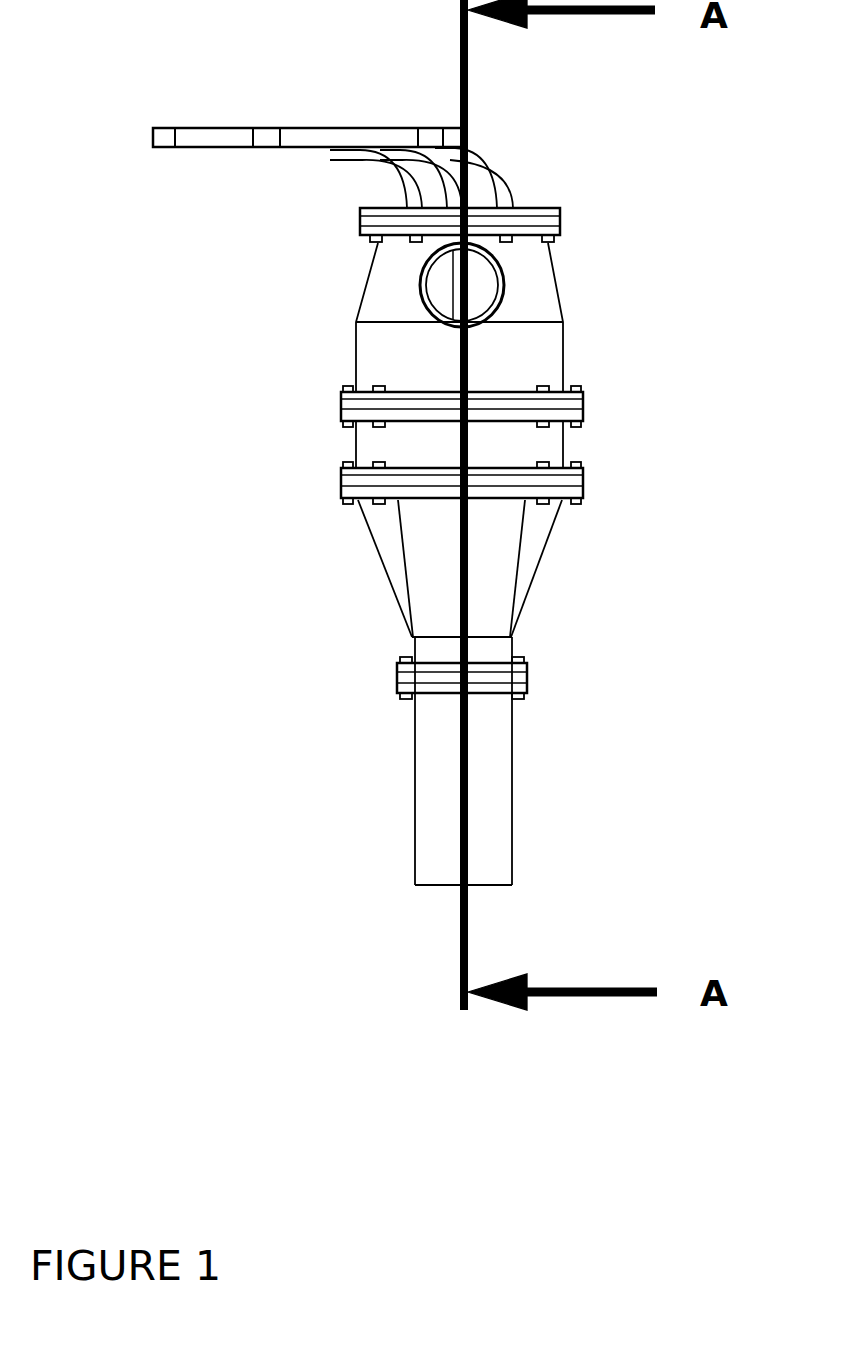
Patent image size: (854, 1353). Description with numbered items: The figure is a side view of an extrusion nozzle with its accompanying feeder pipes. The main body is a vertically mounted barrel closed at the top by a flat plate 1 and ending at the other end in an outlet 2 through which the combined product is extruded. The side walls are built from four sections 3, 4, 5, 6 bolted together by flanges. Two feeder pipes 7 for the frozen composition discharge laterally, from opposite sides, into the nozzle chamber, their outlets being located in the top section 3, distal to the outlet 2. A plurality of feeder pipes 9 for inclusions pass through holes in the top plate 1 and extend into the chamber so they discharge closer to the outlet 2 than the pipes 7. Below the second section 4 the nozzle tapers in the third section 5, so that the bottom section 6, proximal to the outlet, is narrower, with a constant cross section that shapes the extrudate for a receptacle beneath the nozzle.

The flat plate 1 is at (560, 225).
The outlet 2 is at (513, 885).
The top section 3 is at (548, 302).
The second section 4 is at (548, 449).
The third section 5 is at (533, 535).
The bottom section 6 is at (500, 788).
The feeder pipes 7 is at (420, 288).
The feeder pipes 9 is at (440, 175).